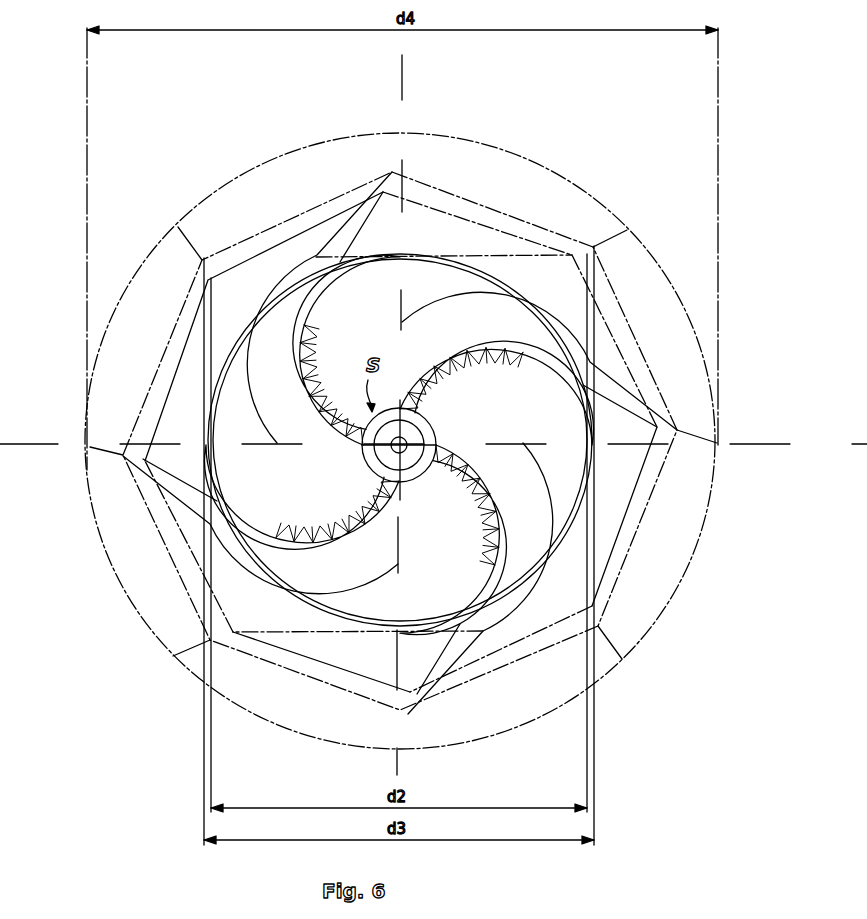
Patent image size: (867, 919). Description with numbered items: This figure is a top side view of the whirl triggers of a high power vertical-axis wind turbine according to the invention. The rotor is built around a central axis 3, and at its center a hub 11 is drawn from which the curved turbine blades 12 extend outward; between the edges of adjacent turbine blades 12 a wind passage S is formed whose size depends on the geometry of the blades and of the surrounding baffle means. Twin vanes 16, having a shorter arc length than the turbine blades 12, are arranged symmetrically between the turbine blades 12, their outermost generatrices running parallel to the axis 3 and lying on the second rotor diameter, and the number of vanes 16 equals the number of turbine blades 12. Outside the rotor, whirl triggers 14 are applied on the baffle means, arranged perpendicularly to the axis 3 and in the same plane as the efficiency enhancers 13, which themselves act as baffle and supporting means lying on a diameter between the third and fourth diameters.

The axis 3 is at (397, 450).
The hub 11 is at (423, 423).
The turbine blades 12 is at (205, 322).
The efficiency enhancers 13 is at (537, 226).
The whirl triggers 14 is at (200, 503).
The twin vanes 16 is at (550, 487).